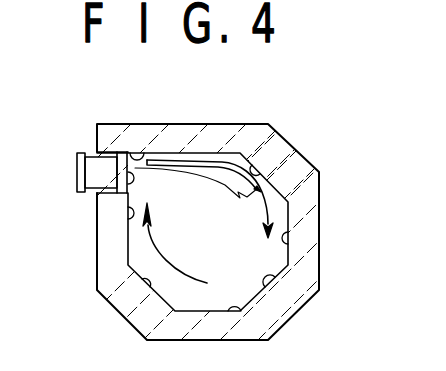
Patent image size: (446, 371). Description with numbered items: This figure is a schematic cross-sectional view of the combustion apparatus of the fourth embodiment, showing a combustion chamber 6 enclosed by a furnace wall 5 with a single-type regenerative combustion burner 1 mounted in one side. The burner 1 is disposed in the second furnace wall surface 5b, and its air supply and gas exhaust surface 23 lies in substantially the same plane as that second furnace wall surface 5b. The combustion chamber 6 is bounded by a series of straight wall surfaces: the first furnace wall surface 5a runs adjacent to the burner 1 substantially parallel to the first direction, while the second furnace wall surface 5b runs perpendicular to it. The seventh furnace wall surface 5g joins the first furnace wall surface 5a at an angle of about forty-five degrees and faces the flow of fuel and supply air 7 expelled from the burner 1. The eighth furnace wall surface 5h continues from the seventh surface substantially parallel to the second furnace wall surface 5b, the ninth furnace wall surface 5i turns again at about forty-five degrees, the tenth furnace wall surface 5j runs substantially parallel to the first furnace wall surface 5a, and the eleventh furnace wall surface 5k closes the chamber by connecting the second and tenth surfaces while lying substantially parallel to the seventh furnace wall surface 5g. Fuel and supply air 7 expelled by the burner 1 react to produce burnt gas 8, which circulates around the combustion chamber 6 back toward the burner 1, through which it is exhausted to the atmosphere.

The single-type regenerative combustion burner 1 is at (79, 143).
The air supply and gas exhaust surface 23 is at (99, 166).
The furnace wall 5 is at (321, 187).
The first furnace wall surface 5a is at (136, 153).
The second furnace wall surface 5b is at (143, 222).
The seventh furnace wall surface 5g is at (258, 172).
The eighth furnace wall surface 5h is at (282, 240).
The ninth furnace wall surface 5i is at (278, 275).
The tenth furnace wall surface 5j is at (250, 299).
The eleventh furnace wall surface 5k is at (117, 305).
The combustion chamber 6 is at (286, 212).
The fuel and supply air 7 is at (170, 163).
The burnt gas 8 is at (140, 227).